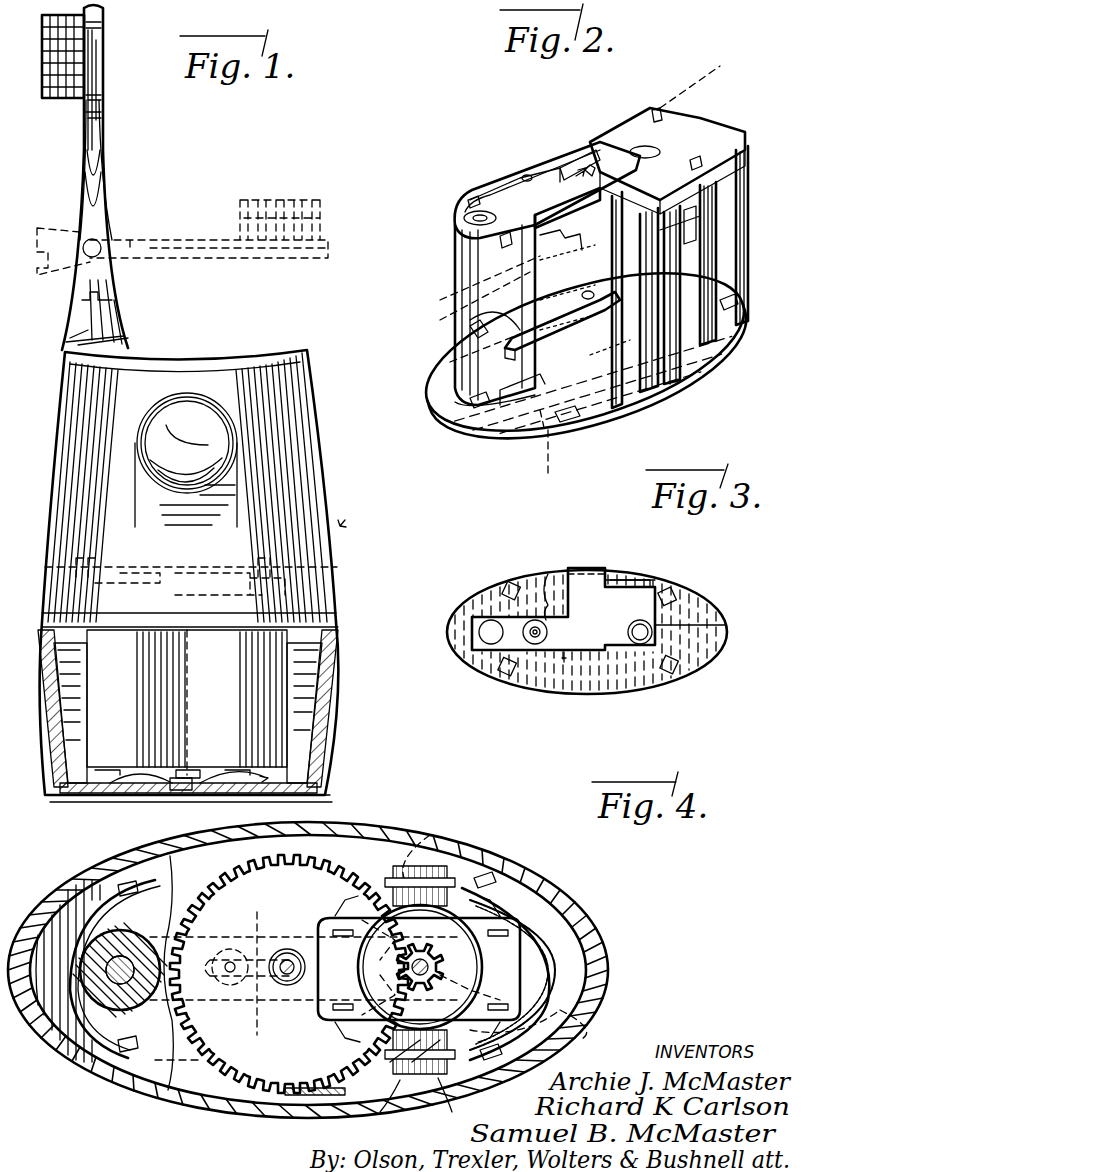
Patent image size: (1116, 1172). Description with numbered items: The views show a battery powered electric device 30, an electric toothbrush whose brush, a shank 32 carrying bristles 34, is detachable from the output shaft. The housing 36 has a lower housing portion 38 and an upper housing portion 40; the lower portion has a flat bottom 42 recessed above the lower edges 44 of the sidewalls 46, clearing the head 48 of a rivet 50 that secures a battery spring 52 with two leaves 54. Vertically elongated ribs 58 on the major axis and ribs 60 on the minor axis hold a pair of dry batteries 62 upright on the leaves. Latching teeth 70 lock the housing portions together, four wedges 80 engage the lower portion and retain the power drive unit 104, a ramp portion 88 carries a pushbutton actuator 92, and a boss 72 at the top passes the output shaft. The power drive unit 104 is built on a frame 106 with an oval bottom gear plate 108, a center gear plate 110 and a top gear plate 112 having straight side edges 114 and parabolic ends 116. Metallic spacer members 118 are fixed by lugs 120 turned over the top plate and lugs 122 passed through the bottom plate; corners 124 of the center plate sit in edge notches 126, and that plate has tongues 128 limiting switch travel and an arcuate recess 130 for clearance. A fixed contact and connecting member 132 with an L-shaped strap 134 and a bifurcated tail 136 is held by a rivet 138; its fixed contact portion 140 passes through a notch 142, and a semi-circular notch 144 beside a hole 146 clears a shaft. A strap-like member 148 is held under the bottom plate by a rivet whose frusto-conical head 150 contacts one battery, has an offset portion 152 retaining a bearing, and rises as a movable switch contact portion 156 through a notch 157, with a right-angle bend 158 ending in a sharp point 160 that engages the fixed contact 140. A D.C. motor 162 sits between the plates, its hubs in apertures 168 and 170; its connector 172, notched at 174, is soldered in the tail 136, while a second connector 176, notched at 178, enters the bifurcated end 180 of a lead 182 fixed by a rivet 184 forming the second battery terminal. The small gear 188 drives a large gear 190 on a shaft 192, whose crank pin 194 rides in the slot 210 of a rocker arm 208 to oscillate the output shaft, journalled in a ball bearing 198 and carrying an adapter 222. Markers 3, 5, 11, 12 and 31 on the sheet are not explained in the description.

In FIG. 2, the section line 3- 3 is at (432, 465).
In FIG. 1, the section line 5- 5 is at (76, 230).
In FIG. 1, the section line 11- 11 is at (98, 587).
In FIG. 1, the section line 12- 12 is at (150, 604).
In FIG. 1, the battery powered electric device 30 is at (355, 602).
In FIG. 4, the battery powered electric device 30 is at (610, 888).
In FIG. 1, the toothbrush 31 is at (69, 186).
In FIG. 1, the shank 32 is at (97, 146).
In FIG. 1, the bristles 34 is at (45, 76).
In FIG. 1, the housing 36 is at (341, 526).
In FIG. 4, the housing 36 is at (626, 966).
In FIG. 1, the lower housing portion 38 is at (356, 686).
In FIG. 1, the upper housing portion 40 is at (300, 452).
In FIG. 4, the upper housing portion 40 is at (470, 880).
In FIG. 1, the flat bottom 42 is at (62, 806).
In FIG. 1, the lower edges 44 is at (52, 797).
In FIG. 1, the sidewalls 46 is at (46, 746).
In FIG. 1, the rivet head 48 is at (178, 794).
In FIG. 1, the rivet 50 is at (188, 800).
In FIG. 1, the battery spring 52 is at (270, 776).
In FIG. 1, the leaves 54 is at (104, 796).
In FIG. 1, the vertically elongated ribs 58 is at (62, 672).
In FIG. 1, the ribs 60 is at (190, 704).
In FIG. 1, the dry batteries 62 is at (98, 706).
In FIG. 1, the latching teeth 70 is at (196, 566).
In FIG. 1, the boss 72 is at (122, 336).
In FIG. 1, the wedges 80 is at (100, 560).
In FIG. 1, the ramp portion 88 is at (135, 494).
In FIG. 1, the pushbutton actuator 92 is at (200, 452).
In FIG. 4, the power drive unit 104 is at (610, 918).
In FIG. 2, the frame 106 is at (448, 262).
In FIG. 2, the bottom gear plate 108 is at (560, 432).
In FIG. 3, the bottom gear plate 108 is at (700, 608).
In FIG. 4, the bottom gear plate 108 is at (570, 1000).
In FIG. 2, the center gear plate 110 is at (566, 262).
In FIG. 2, the top gear plate 112 is at (490, 176).
In FIG. 2, the straight side edges 114 is at (555, 158).
In FIG. 2, the parabolic ends 116 is at (470, 202).
In FIG. 2, the metallic spacer members 118 is at (470, 292).
In FIG. 4, the metallic spacer members 118 is at (52, 906).
In FIG. 2, the lugs 120 is at (474, 196).
In FIG. 1, the lugs 122 is at (108, 866).
In FIG. 2, the lugs 122 is at (528, 436).
In FIG. 3, the lugs 122 is at (510, 584).
In FIG. 4, the lugs 122 is at (110, 866).
In FIG. 2, the corners 124 is at (440, 340).
In FIG. 2, the edge notches 126 is at (520, 326).
In FIG. 2, the tongues 128 is at (540, 266).
In FIG. 2, the arcuate recess 130 is at (470, 360).
In FIG. 2, the fixed contact and connecting member 132 is at (512, 176).
In FIG. 2, the strap 134 is at (600, 122).
In FIG. 2, the bifurcated tail 136 is at (690, 80).
In FIG. 4, the bifurcated tail 136 is at (436, 878).
In FIG. 2, the rivet 138 is at (568, 150).
In FIG. 2, the fixed contact portion 140 is at (670, 158).
In FIG. 2, the notch 142 is at (640, 186).
In FIG. 2, the semi-circular notch 144 is at (586, 165).
In FIG. 2, the hole 146 is at (572, 218).
In FIG. 2, the strap-like member 148 is at (624, 414).
In FIG. 3, the strap-like member 148 is at (564, 664).
In FIG. 2, the frusto-conical rivet head 150 is at (570, 496).
In FIG. 3, the frusto-conical rivet head 150 is at (548, 574).
In FIG. 2, the offset portion 152 is at (440, 432).
In FIG. 2, the movable switch contact portion 156 is at (648, 396).
In FIG. 3, the movable switch contact portion 156 is at (588, 566).
In FIG. 4, the movable switch contact portion 156 is at (296, 1096).
In FIG. 3, the notch 157 is at (606, 566).
In FIG. 2, the right-angle bend 158 is at (615, 276).
In FIG. 2, the sharp point 160 is at (690, 216).
In FIG. 4, the D.C. motor 162 is at (558, 962).
In FIG. 2, the aperture 168 is at (665, 140).
In FIG. 2, the aperture 170 is at (690, 240).
In FIG. 4, the electrical connector 172 is at (95, 1075).
In FIG. 4, the notch 174 is at (432, 870).
In FIG. 4, the second electrical connector 176 is at (436, 1075).
In FIG. 4, the notch 178 is at (402, 1080).
In FIG. 2, the bifurcated upstanding end 180 is at (700, 206).
In FIG. 2, the electrical lead 182 is at (690, 300).
In FIG. 3, the electrical lead 182 is at (640, 590).
In FIG. 3, the frusto-conical headed rivet 184 is at (655, 626).
In FIG. 4, the small gear 188 is at (478, 994).
In FIG. 4, the large gear 190 is at (236, 1082).
In FIG. 4, the shaft 192 is at (290, 950).
In FIG. 2, the crank pin 194 is at (592, 288).
In FIG. 2, the ball bearing 198 is at (464, 218).
In FIG. 4, the rocker arm 208 is at (256, 1010).
In FIG. 4, the slot 210 is at (258, 950).
In FIG. 1, the adapter 222 is at (100, 290).